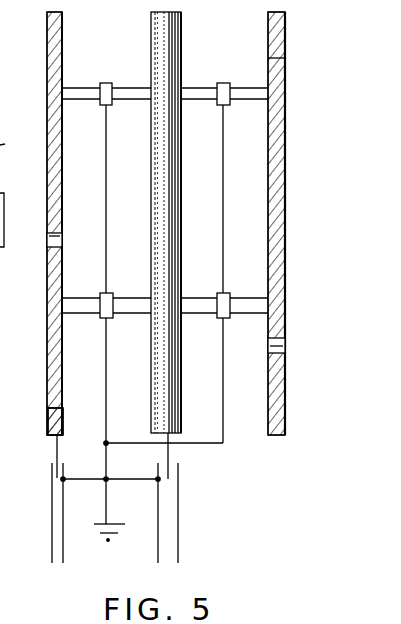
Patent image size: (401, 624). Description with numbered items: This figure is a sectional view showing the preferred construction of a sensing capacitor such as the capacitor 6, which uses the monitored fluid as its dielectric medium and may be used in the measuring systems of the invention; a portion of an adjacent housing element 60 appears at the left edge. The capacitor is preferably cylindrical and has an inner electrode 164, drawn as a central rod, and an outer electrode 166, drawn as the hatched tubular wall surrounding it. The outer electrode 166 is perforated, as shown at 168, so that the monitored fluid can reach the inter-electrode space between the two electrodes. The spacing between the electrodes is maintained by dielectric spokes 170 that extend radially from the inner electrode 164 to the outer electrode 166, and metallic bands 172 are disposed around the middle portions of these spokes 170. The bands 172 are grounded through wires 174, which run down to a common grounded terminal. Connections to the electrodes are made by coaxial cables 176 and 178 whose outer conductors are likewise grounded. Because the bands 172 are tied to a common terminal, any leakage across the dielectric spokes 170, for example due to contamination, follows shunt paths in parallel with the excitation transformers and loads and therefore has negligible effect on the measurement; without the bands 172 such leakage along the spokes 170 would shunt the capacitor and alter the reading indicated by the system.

The capacitor 6 is at (167, 233).
The housing 60 is at (11, 195).
The inner electrode 164 is at (168, 44).
The outer electrode 166 is at (277, 82).
The perforation 168 is at (276, 58).
The dielectric spoke 170 is at (123, 90).
The metallic band 172 is at (102, 83).
The wire 174 is at (106, 381).
The coaxial cable 176 is at (180, 537).
The coaxial cable 178 is at (66, 545).